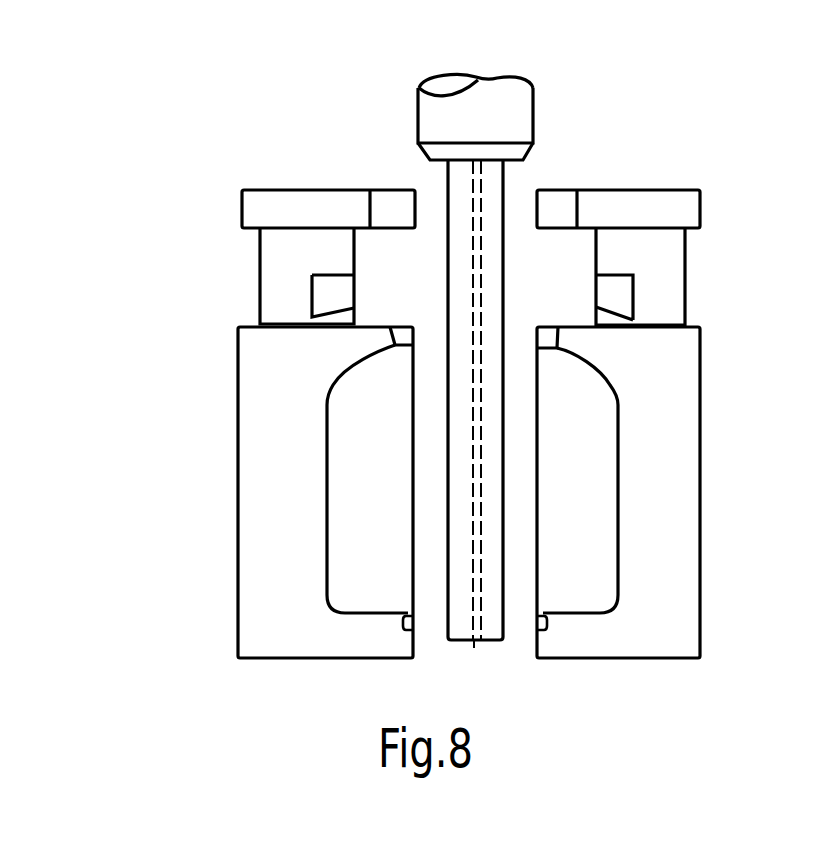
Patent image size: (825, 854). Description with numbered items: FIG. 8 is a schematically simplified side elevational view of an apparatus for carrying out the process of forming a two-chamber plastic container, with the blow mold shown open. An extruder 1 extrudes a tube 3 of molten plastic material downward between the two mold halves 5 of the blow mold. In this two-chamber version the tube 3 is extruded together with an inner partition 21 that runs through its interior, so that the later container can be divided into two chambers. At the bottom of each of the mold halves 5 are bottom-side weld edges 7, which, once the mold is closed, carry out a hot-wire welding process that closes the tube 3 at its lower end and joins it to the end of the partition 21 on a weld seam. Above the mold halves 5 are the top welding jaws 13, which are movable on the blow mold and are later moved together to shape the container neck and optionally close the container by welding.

The extruder 1 is at (430, 107).
The tube 3 is at (503, 178).
The mold halves 5 is at (252, 485).
The bottom-side weld edges 7 is at (413, 628).
The top welding jaws 13 is at (268, 266).
The inner partition 21 is at (473, 207).